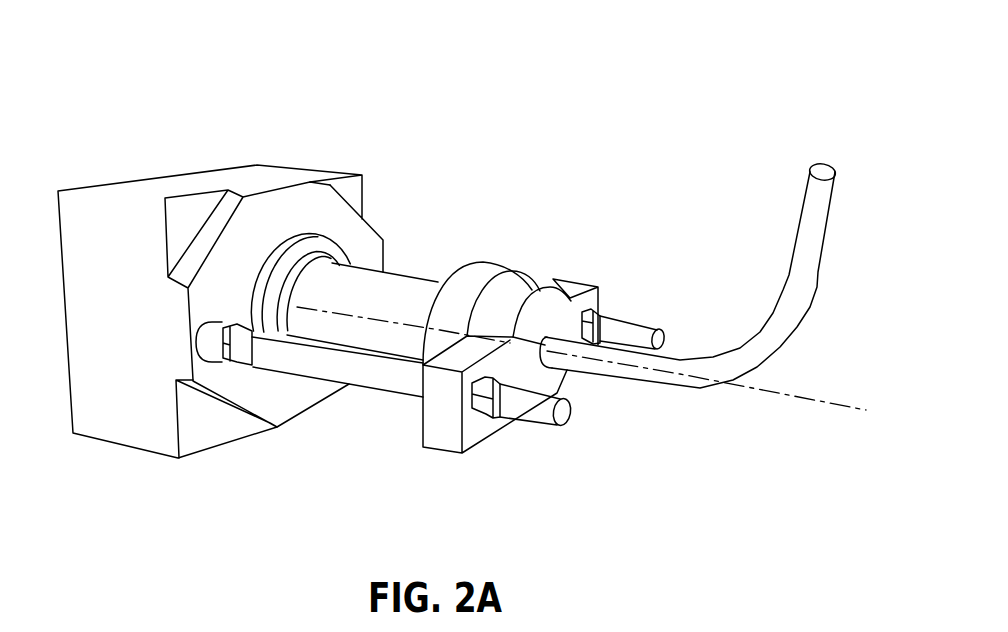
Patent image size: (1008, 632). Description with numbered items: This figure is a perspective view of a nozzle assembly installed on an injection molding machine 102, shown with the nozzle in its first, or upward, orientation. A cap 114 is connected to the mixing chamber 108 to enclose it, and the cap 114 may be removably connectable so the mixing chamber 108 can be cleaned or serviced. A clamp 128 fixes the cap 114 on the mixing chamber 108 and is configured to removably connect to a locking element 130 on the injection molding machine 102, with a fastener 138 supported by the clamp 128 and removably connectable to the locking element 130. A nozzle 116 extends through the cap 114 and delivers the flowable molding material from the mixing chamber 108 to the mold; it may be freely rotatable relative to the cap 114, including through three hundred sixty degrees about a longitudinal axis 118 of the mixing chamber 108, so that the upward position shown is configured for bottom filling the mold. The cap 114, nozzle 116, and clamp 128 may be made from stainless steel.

The injection molding machine 102 is at (784, 109).
The mixing chamber 108 is at (402, 290).
The cap 114 is at (468, 273).
The nozzle 116 is at (758, 335).
The longitudinal axis 118 is at (802, 397).
The clamp 128 is at (523, 293).
The locking element 130 is at (377, 380).
The fastener 138 is at (482, 401).